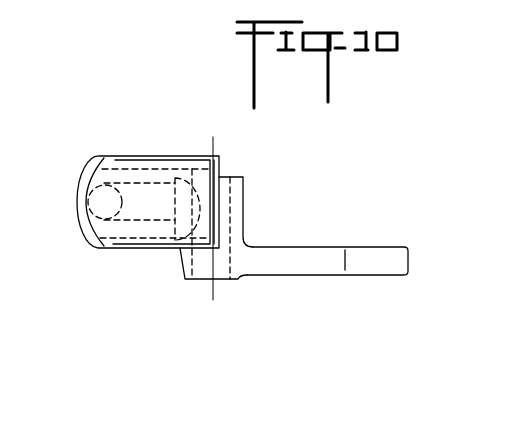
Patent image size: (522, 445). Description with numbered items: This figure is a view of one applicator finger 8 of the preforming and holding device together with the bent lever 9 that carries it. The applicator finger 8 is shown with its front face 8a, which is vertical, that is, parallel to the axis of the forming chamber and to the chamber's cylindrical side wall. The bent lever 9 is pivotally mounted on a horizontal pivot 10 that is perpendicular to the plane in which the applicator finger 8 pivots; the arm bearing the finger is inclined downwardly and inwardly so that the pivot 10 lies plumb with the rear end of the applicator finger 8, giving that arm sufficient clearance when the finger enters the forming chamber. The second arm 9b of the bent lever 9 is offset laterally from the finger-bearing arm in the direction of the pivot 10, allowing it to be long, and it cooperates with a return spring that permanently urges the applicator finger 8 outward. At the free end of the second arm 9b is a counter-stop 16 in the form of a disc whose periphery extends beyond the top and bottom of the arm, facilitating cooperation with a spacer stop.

The applicator finger 8 is at (104, 247).
The front face 8a is at (83, 172).
The bent lever 9 is at (245, 283).
The second arm 9b is at (295, 257).
The pivot 10 is at (212, 286).
The counter-stop 16 is at (385, 257).